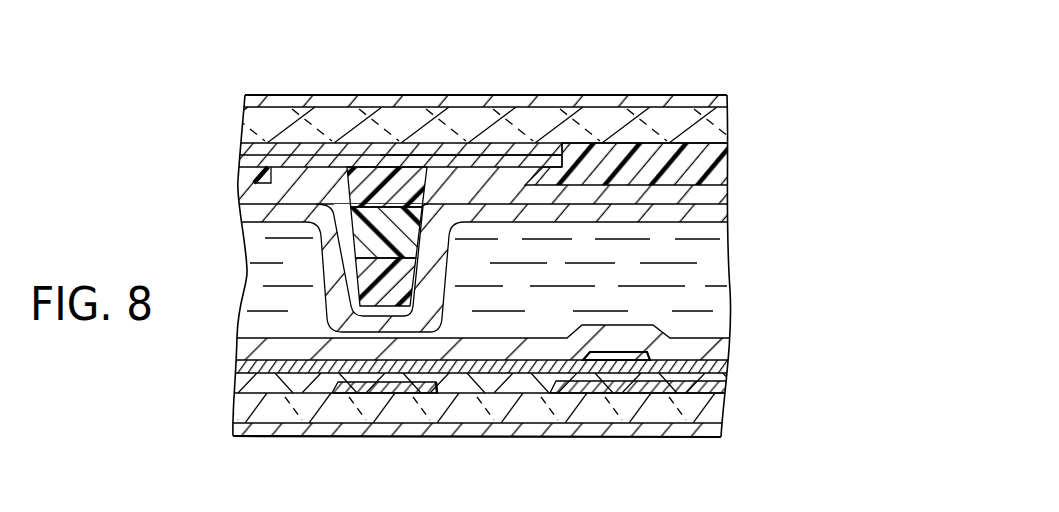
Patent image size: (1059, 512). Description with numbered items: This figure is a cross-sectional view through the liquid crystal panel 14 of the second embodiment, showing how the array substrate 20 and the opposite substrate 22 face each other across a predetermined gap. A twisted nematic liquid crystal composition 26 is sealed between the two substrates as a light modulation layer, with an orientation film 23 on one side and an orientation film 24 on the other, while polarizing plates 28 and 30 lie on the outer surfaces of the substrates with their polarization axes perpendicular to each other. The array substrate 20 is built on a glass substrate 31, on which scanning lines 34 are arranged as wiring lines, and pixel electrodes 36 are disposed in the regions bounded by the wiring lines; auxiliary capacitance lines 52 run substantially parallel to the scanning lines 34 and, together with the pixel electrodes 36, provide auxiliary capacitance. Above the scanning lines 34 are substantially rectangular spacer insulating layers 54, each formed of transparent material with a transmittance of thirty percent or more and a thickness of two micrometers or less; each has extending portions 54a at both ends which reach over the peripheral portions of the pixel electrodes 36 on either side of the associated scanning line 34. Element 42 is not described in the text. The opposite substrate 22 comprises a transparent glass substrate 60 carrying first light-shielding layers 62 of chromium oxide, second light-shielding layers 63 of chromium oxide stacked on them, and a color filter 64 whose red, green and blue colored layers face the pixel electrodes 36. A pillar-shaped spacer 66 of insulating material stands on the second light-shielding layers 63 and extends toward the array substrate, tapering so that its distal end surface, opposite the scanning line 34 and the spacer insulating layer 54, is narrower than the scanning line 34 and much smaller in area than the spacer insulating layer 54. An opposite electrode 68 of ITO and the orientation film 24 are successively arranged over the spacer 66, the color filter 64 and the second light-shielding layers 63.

The liquid crystal panel 14 is at (471, 242).
The array substrate 20 is at (467, 386).
The opposite substrate 22 is at (496, 183).
The orientation film 23 is at (717, 348).
The orientation film 24 is at (717, 213).
The liquid crystal composition 26 is at (717, 279).
The polarizing plate 28 is at (715, 437).
The polarizing plate 30 is at (706, 95).
The glass substrate 31 is at (660, 405).
The scanning line 34 is at (393, 394).
The pixel electrode 36 is at (593, 372).
The data line 42 is at (545, 394).
The auxiliary capacitance line 52 is at (717, 387).
The spacer insulating layer 54 is at (457, 365).
The extending portion 54a is at (620, 342).
The glass substrate 60 is at (708, 130).
The first light-shielding layer 62 is at (470, 143).
The second light-shielding layer 63 is at (400, 157).
The color filter 64 is at (258, 170).
The pillar-shaped spacer 66 is at (370, 177).
The opposite electrode 68 is at (715, 195).